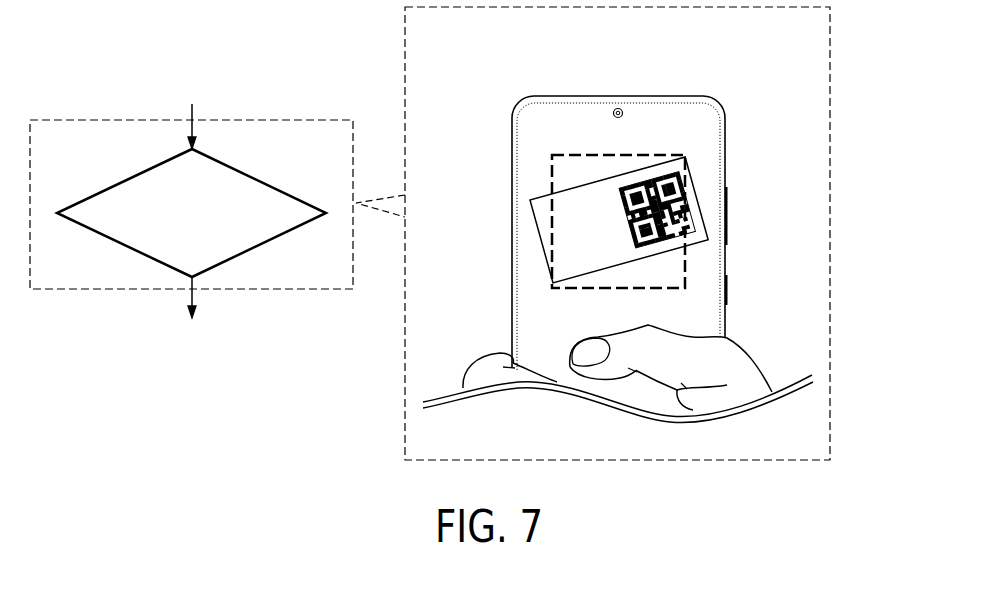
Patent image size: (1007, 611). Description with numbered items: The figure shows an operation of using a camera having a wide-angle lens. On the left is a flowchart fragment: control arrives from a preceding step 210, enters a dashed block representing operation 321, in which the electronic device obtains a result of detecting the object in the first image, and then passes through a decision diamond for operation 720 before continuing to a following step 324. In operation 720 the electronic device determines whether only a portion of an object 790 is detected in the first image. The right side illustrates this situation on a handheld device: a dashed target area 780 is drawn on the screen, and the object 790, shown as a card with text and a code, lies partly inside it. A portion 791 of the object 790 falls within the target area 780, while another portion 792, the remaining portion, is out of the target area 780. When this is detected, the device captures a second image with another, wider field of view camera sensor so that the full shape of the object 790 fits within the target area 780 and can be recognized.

The preceding operation (from) 210 is at (237, 99).
The operation of obtaining a result of detecting the object 321 is at (287, 120).
The subsequent operation (to) 324 is at (223, 354).
The operation of determining whether only a portion of an object is detected 720 is at (260, 181).
The target area 780 is at (617, 153).
The object 790 is at (739, 200).
The portion of the object 791 is at (684, 160).
The another portion of the object 792 is at (693, 210).